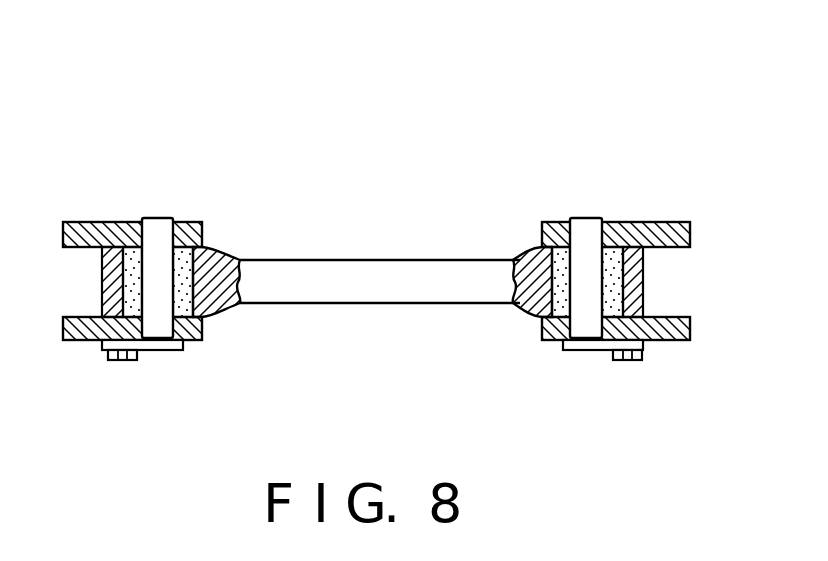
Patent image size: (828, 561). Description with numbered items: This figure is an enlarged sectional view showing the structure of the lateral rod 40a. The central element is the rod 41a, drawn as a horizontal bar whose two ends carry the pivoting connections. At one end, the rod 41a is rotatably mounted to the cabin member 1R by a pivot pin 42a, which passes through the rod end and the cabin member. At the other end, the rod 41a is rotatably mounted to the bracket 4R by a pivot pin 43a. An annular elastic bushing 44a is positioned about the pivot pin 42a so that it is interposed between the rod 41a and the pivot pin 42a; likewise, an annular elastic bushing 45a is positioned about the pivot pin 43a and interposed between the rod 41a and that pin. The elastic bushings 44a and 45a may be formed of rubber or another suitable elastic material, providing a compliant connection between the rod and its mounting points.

The lateral rod 40a is at (371, 263).
The rod 41a is at (372, 305).
The pivot pin 42a is at (156, 237).
The pivot pin 43a is at (585, 230).
The annular elastic bushing 44a is at (182, 272).
The annular elastic bushing 45a is at (560, 245).
The cabin member 1R is at (82, 337).
The bracket 4R is at (678, 335).